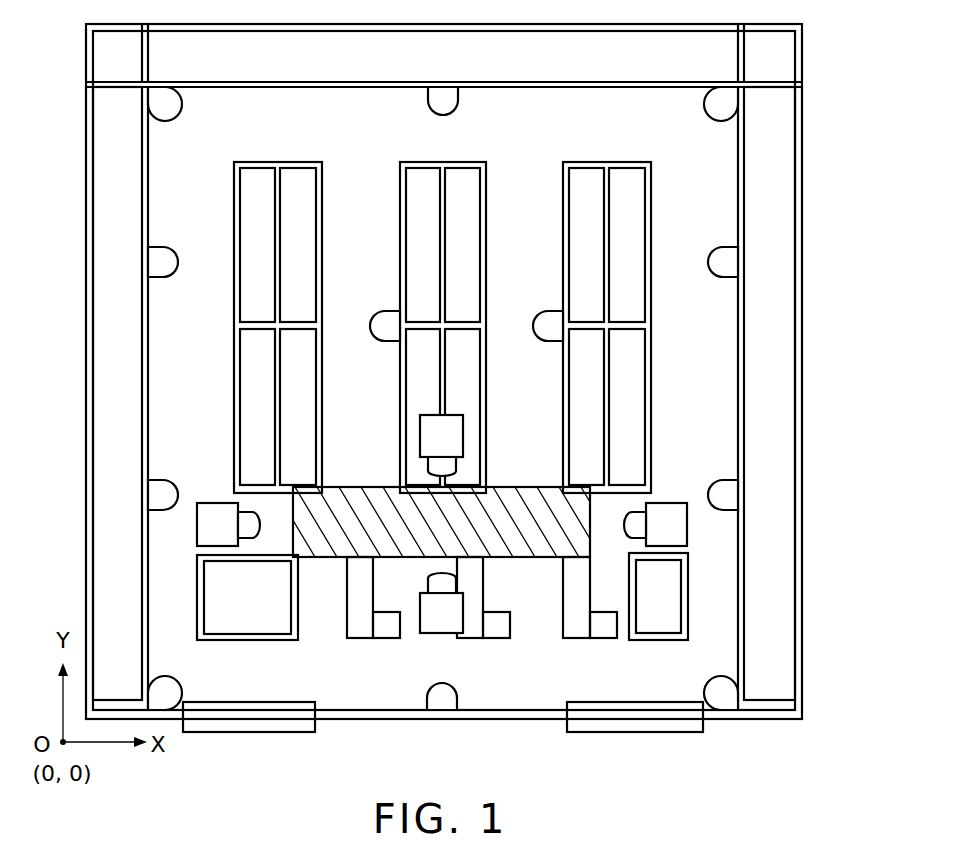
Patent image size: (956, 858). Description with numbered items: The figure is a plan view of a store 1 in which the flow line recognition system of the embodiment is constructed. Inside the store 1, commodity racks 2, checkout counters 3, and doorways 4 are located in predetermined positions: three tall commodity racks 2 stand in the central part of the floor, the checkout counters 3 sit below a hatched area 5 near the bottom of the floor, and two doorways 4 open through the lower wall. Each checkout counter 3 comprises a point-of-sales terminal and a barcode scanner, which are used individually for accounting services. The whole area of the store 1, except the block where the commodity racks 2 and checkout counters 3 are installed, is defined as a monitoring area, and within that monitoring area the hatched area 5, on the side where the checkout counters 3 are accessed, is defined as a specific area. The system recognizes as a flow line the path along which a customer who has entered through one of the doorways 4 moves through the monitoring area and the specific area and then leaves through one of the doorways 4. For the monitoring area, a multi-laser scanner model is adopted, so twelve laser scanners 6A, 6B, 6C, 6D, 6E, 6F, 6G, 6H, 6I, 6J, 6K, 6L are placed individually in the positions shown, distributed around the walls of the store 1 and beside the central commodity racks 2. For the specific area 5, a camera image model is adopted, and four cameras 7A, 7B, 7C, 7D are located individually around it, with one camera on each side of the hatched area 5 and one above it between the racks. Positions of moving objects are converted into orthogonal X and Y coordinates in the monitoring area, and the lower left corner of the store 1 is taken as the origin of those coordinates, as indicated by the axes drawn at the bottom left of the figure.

The store 1 is at (803, 187).
The commodity racks 2 is at (282, 162).
The checkout counters 3 is at (362, 640).
The doorways 4 is at (254, 733).
The hatched area (specific area) 5 is at (524, 486).
The laser scanner 6A is at (184, 112).
The laser scanner 6B is at (460, 103).
The laser scanner 6C is at (704, 105).
The laser scanner 6D is at (724, 246).
The laser scanner 6E is at (724, 480).
The laser scanner 6F is at (702, 685).
The laser scanner 6G is at (434, 690).
The laser scanner 6H is at (185, 683).
The laser scanner 6I is at (159, 479).
The laser scanner 6J is at (161, 245).
The laser scanner 6K is at (382, 311).
The laser scanner 6L is at (549, 311).
The camera 7A is at (213, 502).
The camera 7B is at (419, 437).
The camera 7C is at (675, 502).
The camera 7D is at (420, 605).